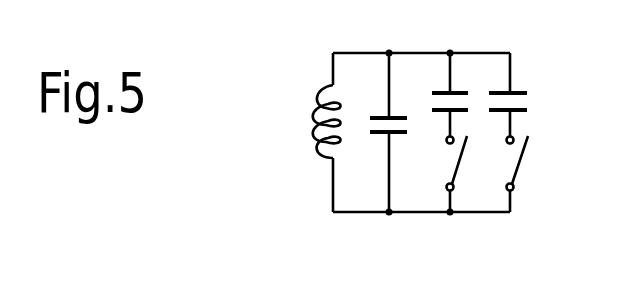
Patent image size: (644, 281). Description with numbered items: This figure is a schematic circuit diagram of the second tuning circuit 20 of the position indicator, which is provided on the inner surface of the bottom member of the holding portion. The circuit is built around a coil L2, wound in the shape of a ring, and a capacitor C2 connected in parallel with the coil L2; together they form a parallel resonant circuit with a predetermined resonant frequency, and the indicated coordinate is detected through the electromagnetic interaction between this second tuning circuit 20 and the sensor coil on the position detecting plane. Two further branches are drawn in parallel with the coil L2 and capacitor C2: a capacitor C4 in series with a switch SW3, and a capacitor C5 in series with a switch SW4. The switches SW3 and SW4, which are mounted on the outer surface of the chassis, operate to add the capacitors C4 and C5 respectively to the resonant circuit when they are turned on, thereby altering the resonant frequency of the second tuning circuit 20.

The second tuning circuit 20 is at (292, 66).
The coil L2 is at (308, 121).
The capacitor C2 is at (397, 108).
The capacitor C4 is at (458, 87).
The capacitor C5 is at (525, 87).
The switch SW3 is at (461, 161).
The switch SW4 is at (523, 158).